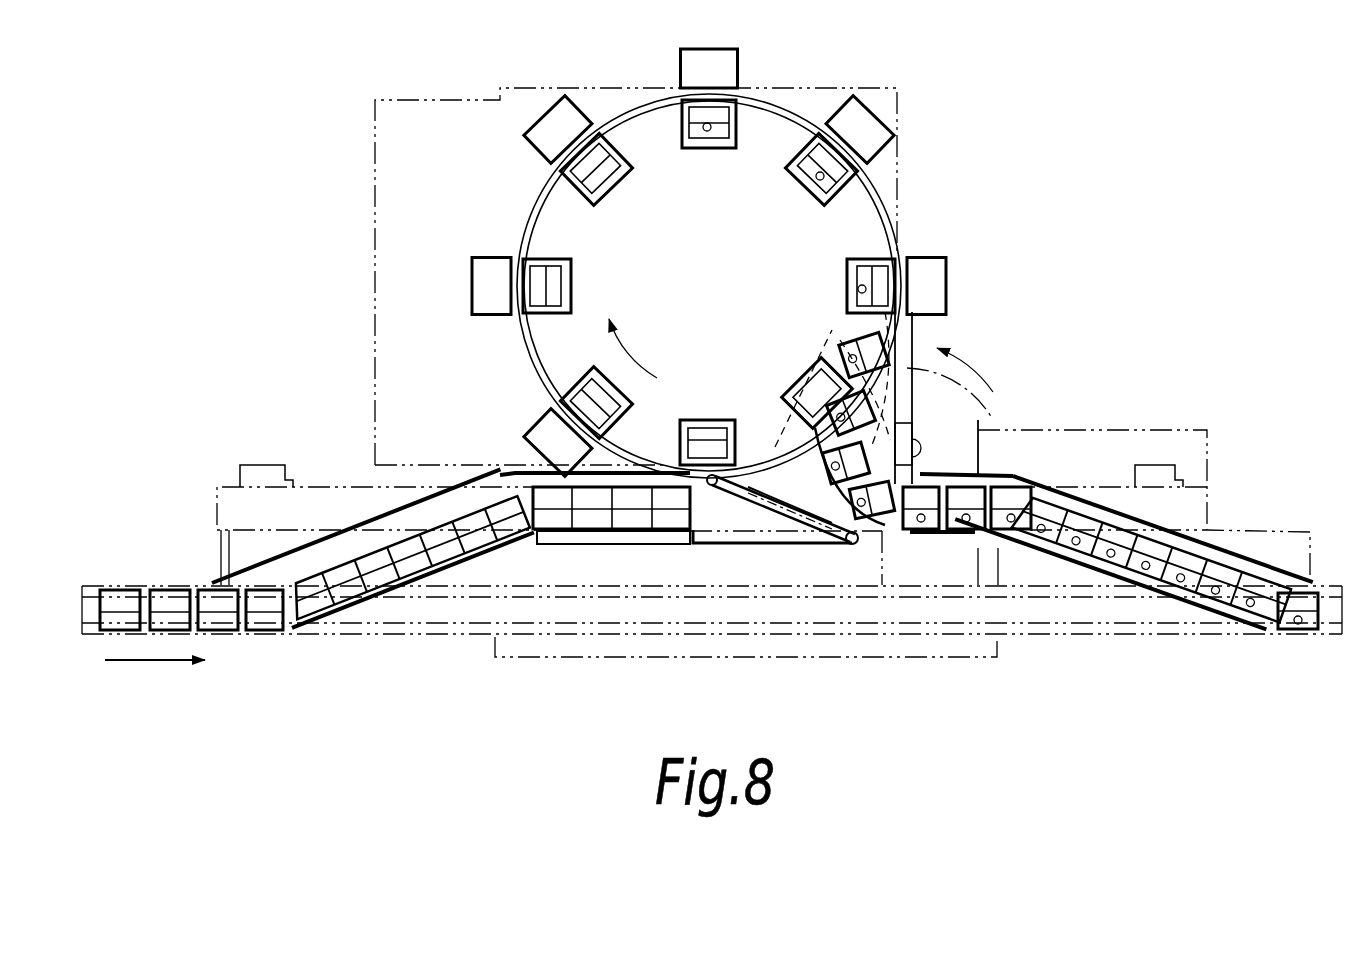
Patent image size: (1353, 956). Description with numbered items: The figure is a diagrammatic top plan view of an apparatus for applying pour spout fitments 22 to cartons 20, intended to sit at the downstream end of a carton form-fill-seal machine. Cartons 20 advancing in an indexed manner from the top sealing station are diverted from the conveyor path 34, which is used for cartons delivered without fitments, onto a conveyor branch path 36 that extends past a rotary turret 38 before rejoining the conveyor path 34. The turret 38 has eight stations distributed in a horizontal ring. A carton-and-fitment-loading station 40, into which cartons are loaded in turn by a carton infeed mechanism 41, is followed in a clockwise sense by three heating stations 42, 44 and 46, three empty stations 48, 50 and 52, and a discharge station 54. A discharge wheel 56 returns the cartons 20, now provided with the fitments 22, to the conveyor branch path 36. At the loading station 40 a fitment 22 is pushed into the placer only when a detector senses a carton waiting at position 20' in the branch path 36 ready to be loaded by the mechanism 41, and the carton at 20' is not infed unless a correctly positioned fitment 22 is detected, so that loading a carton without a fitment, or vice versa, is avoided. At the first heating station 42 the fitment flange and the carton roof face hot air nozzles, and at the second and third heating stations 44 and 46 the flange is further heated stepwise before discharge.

The cartons 20 is at (400, 335).
The carton position in branch path 20' is at (687, 595).
The pour spout fitments 22 is at (820, 176).
The conveyor path 34 is at (763, 615).
The conveyor branch path 36 is at (378, 528).
The rotary turret 38 is at (425, 325).
The carton-and-fitment-loading station 40 is at (738, 414).
The carton infeed mechanism 41 is at (790, 515).
The first heating station 42 is at (553, 401).
The second heating station 44 is at (520, 250).
The third heating station 46 is at (552, 163).
The empty station 48 is at (745, 82).
The empty station 50 is at (892, 180).
The empty station 52 is at (908, 247).
The discharge station 54 is at (805, 381).
The discharge wheel 56 is at (956, 427).